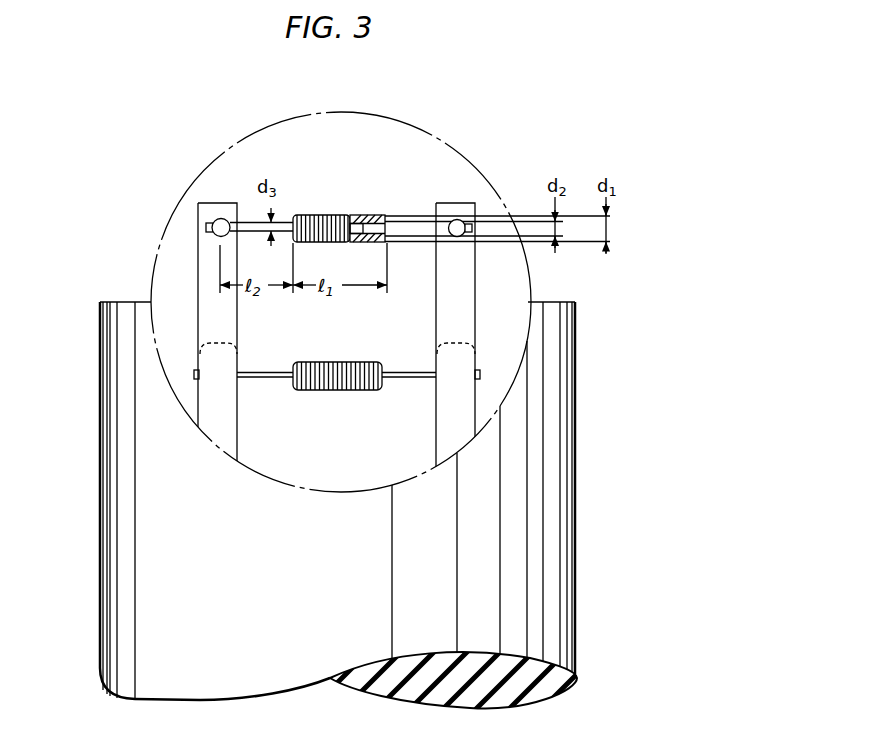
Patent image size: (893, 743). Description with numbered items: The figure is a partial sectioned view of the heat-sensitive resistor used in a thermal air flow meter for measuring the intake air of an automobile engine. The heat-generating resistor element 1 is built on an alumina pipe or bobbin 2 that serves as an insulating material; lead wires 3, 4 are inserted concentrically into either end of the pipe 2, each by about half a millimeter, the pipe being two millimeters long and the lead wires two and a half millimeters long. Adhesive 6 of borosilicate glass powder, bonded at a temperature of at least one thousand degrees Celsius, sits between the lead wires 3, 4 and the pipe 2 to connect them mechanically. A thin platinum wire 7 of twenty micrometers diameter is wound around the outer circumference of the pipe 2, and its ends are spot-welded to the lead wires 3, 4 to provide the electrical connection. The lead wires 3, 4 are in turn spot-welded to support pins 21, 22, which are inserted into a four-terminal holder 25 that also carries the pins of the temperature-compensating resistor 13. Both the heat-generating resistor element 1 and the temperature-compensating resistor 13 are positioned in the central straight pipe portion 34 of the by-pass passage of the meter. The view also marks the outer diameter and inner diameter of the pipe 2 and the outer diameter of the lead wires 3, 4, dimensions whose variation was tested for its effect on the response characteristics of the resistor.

The heat-generating resistor element 1 is at (323, 215).
The alumina pipe or bobbin 2 is at (355, 215).
The lead wire 3 is at (252, 222).
The lead wire 4 is at (418, 222).
The adhesive 6 is at (375, 215).
The thin platinum wire 7 is at (313, 215).
The temperature-compensating resistor 13 is at (320, 362).
The support pin 21 is at (465, 279).
The support pin 22 is at (200, 249).
The 4-terminal holder 25 is at (116, 511).
The central straight pipe portion 34 is at (328, 112).